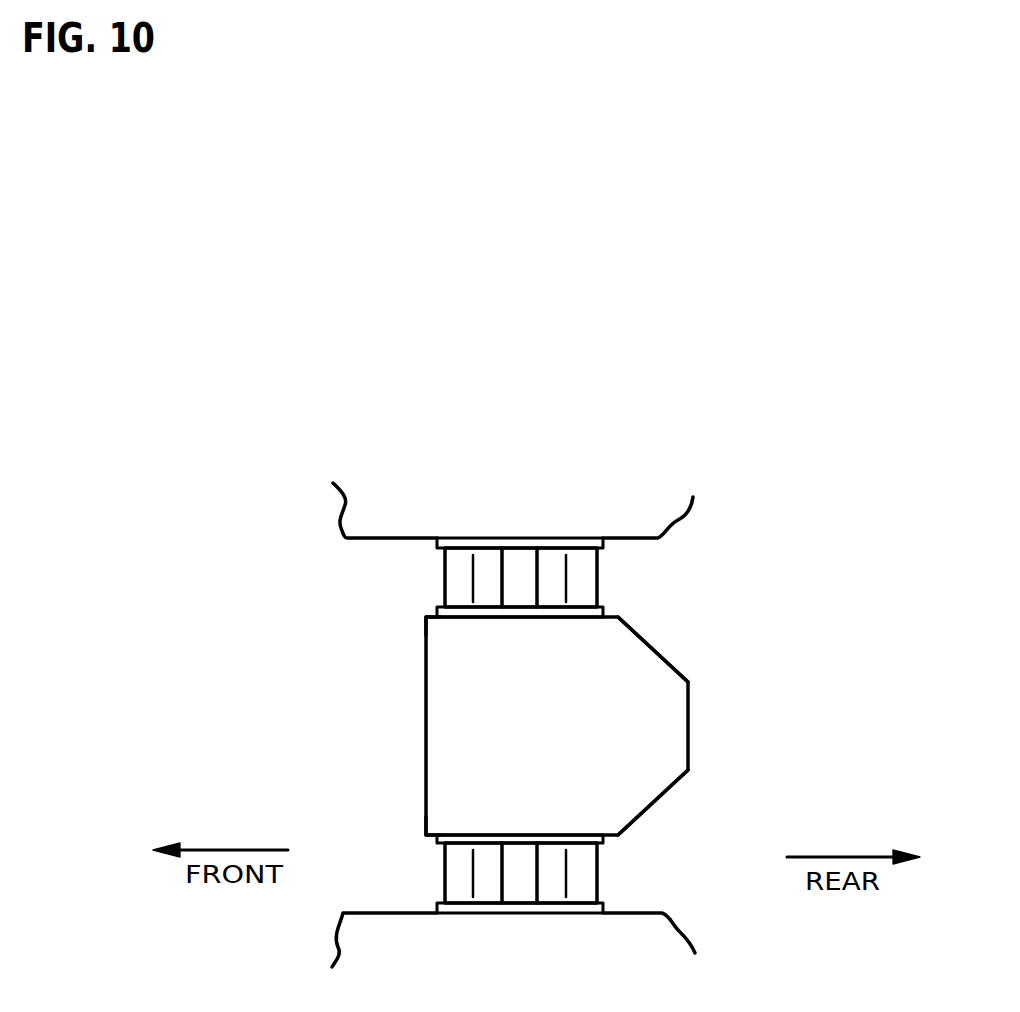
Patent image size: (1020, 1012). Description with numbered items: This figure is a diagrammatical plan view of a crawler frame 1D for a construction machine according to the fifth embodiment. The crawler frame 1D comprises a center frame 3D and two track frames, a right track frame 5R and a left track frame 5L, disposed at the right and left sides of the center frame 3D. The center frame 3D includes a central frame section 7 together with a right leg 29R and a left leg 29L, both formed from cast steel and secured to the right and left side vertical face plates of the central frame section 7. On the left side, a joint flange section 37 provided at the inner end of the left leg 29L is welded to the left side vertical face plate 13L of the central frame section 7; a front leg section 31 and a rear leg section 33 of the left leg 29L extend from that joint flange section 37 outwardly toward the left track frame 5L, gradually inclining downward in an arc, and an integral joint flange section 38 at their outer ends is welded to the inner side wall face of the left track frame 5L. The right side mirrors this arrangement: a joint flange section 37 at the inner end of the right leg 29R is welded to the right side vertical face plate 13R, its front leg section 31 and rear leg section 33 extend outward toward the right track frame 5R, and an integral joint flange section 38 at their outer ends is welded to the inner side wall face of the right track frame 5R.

The crawler frame 1D is at (360, 715).
The center frame 3D is at (712, 743).
The right track frame 5R is at (655, 508).
The left track frame 5L is at (627, 935).
The central frame section 7 is at (657, 690).
The right side vertical face plate 13R is at (427, 618).
The left side vertical face plate 13L is at (427, 836).
The right leg 29R is at (603, 565).
The left leg 29L is at (603, 865).
The front leg section 31 is at (455, 572).
The rear leg section 33 is at (575, 592).
The joint flange section 37 is at (548, 617).
The integral joint flange section 38 is at (520, 538).